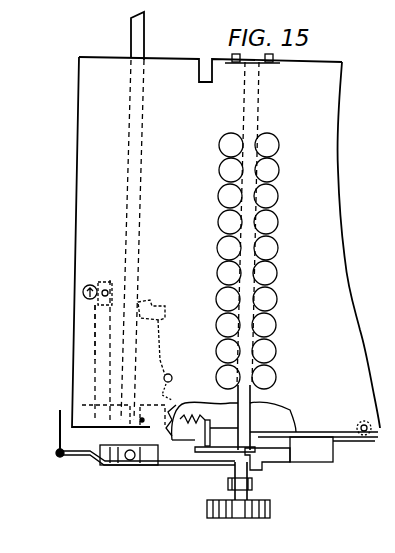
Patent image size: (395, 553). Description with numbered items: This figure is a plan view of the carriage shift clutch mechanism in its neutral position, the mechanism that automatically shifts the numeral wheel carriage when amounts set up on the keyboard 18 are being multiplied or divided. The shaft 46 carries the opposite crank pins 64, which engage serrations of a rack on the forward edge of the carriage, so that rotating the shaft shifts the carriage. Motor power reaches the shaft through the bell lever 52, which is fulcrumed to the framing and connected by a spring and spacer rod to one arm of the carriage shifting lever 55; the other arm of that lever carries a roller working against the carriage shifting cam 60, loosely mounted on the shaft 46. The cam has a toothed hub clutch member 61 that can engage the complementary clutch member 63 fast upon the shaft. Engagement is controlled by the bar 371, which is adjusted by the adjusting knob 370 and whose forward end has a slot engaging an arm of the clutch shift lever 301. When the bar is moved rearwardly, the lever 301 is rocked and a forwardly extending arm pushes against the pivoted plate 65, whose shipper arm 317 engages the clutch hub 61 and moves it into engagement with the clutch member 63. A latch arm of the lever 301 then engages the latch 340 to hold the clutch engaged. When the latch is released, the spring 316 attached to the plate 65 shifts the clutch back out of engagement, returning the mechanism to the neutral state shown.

The keyboard 18 is at (277, 301).
The shaft 46 is at (250, 415).
The bell lever 52 is at (58, 423).
The carriage shifting lever 55 is at (155, 466).
The carriage shifting cam 60 is at (226, 452).
The toothed hub clutch member 61 is at (238, 456).
The clutch member 63 is at (238, 483).
The crank pins 64 is at (245, 63).
The pivoted plate 65 is at (211, 432).
The clutch shift lever 301 is at (156, 358).
The spring 316 is at (173, 383).
The shipper arm 317 is at (268, 457).
The latch 340 is at (160, 305).
The adjusting knob 370 is at (83, 292).
The bar 371 is at (100, 350).